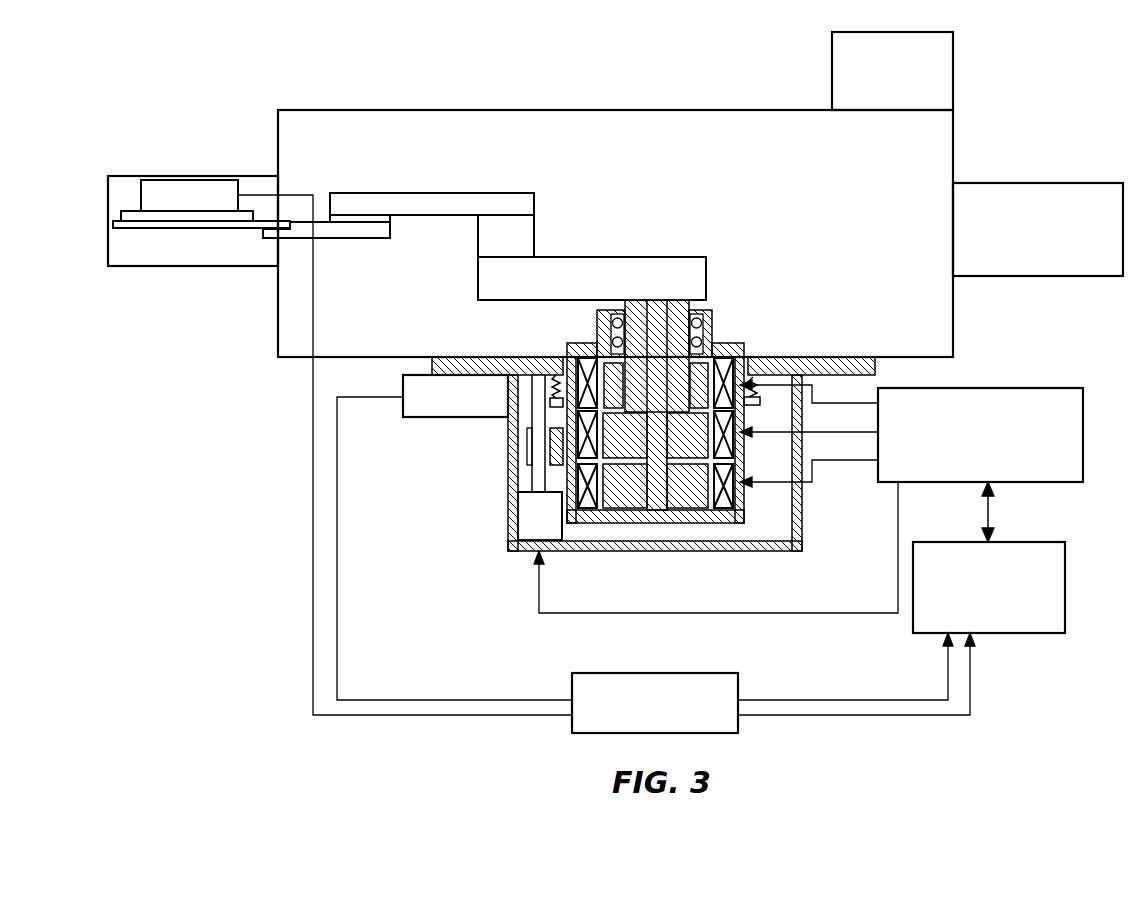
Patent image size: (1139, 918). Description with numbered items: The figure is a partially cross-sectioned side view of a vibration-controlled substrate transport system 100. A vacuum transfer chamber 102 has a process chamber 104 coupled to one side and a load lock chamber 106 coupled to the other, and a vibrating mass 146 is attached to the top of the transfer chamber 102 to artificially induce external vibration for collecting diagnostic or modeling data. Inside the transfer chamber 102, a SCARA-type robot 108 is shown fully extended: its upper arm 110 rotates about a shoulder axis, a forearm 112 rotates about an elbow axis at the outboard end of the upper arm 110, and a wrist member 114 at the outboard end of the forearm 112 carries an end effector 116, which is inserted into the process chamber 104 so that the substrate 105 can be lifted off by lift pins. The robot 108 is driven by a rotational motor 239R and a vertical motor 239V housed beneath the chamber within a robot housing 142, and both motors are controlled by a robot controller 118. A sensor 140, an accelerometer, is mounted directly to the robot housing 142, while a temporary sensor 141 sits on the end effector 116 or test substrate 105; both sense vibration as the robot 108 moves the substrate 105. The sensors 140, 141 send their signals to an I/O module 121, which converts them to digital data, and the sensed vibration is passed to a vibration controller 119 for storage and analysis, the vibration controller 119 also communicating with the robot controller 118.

The substrate transport system 100 is at (588, 100).
The vacuum transfer chamber 102 is at (615, 233).
The process chamber 104 is at (193, 221).
The substrate 105 is at (128, 212).
The load lock chamber 106 is at (1038, 229).
The robot 108 is at (708, 250).
The upper arm 110 is at (590, 275).
The forearm 112 is at (442, 205).
The wrist member 114 is at (330, 230).
The end effector 116 is at (238, 228).
The robot controller 118 is at (997, 483).
The vibration controller 119 is at (1010, 635).
The I/O module 121 is at (668, 673).
The sensor 140 is at (458, 418).
The sensor 141 is at (190, 180).
The robot housing 142 is at (507, 437).
The vibrating mass 146 is at (892, 71).
The vertical motor 239V is at (506, 519).
The rotational motor 239R is at (725, 535).